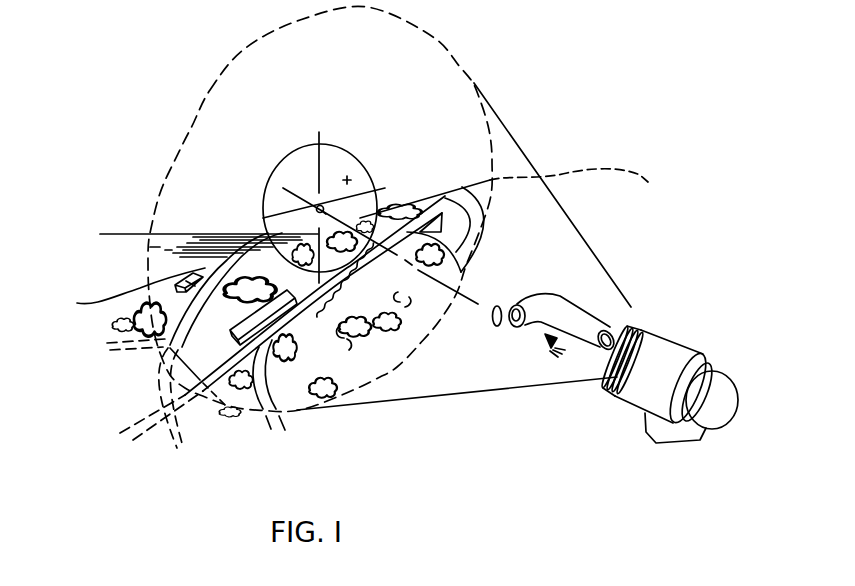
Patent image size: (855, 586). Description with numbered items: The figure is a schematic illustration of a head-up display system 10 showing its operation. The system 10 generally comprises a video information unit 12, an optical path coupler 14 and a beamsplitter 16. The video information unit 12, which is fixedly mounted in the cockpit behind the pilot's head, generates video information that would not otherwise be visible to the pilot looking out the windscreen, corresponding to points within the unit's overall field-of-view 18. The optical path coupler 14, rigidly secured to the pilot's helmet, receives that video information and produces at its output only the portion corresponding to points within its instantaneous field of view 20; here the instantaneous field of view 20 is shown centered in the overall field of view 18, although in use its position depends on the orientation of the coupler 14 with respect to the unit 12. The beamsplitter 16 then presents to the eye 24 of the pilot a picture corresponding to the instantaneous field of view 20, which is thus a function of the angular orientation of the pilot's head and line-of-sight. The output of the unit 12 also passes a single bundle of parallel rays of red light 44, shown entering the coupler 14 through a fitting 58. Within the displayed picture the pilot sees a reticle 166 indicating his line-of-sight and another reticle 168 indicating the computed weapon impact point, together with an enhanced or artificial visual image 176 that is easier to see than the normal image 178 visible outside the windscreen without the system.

The head-up display system 10 is at (575, 377).
The video information unit 12 is at (636, 409).
The optical path coupler 14 is at (552, 295).
The beamsplitter 16 is at (491, 317).
The overall field-of-view 18 is at (249, 51).
The instantaneous field of view 20 is at (339, 144).
The eye 24 is at (535, 335).
The parallel rays of red light 44 is at (652, 332).
The hose fitting 58 is at (609, 348).
The reticle 166 is at (316, 208).
The reticle 168 is at (355, 177).
The enhanced or artificial visual image 176 is at (308, 365).
The normal image 178 is at (117, 330).